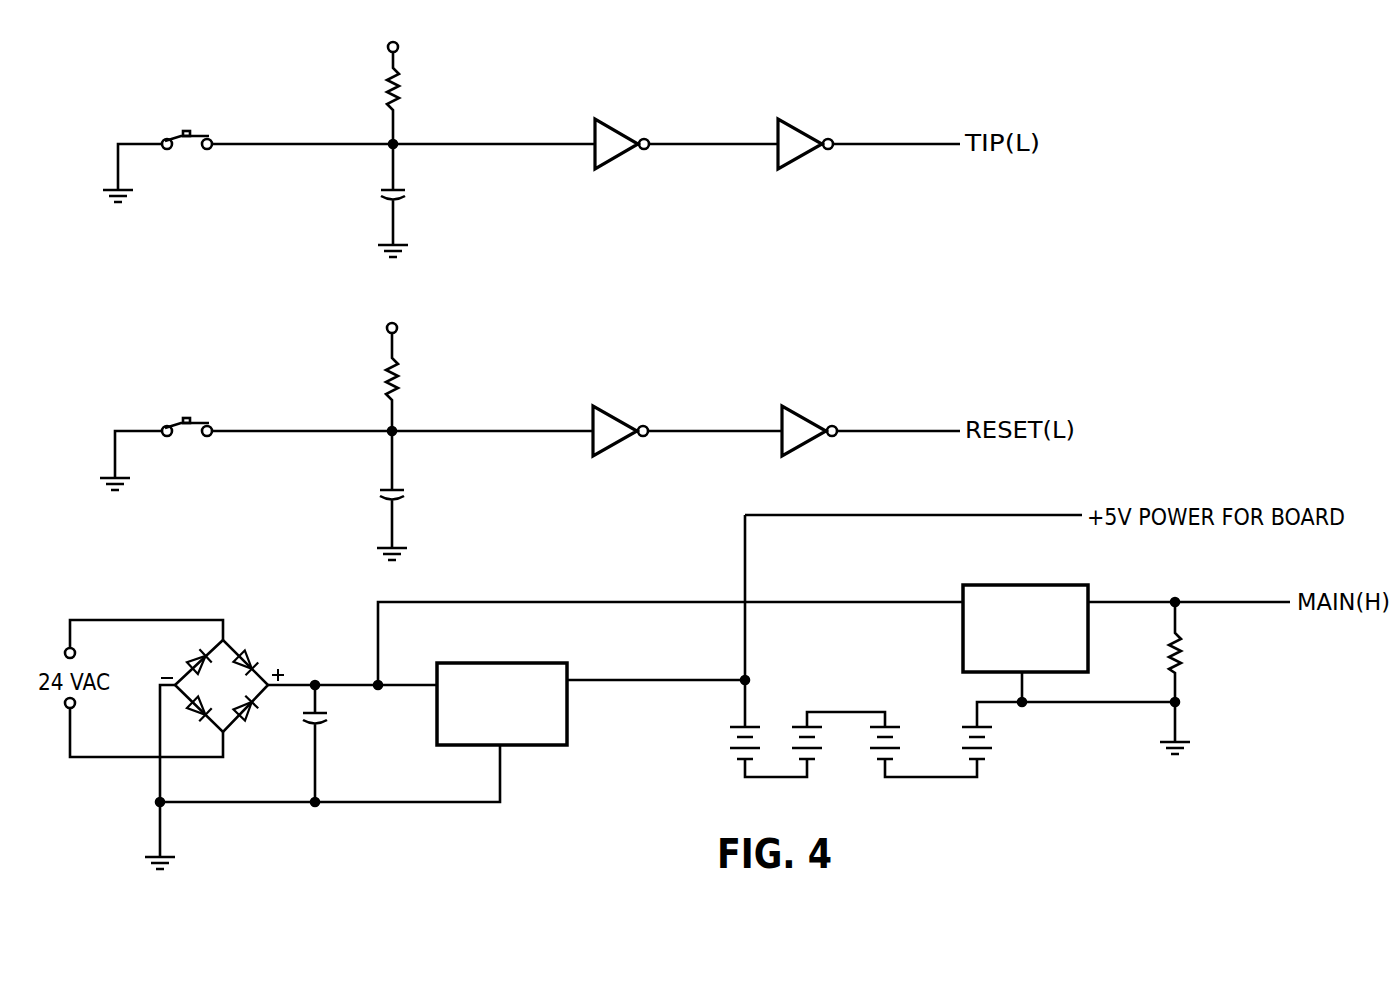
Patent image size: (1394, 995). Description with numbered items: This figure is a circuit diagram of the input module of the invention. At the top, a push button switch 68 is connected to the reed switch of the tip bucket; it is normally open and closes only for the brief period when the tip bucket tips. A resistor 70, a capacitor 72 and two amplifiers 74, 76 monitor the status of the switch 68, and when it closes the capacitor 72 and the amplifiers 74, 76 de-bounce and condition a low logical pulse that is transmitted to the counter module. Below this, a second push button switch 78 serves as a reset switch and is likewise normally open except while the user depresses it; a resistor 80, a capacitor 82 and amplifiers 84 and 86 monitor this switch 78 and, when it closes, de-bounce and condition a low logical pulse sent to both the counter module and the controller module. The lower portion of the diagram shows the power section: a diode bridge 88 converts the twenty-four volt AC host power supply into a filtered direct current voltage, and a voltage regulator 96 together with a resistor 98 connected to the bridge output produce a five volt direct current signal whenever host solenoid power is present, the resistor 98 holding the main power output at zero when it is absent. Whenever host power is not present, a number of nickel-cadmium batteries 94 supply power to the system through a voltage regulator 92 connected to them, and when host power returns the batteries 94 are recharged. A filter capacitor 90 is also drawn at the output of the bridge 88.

The push button switch 68 is at (167, 126).
The resistor 70 is at (392, 86).
The capacitor 72 is at (383, 193).
The amplifier 74 is at (598, 118).
The amplifier 76 is at (783, 118).
The push button switch 78 is at (167, 416).
The resistor 80 is at (390, 380).
The capacitor 82 is at (380, 492).
The amplifier 84 is at (598, 405).
The amplifier 86 is at (785, 405).
The diode bridge 88 is at (237, 630).
The capacitor C4 90 is at (322, 725).
The voltage regulator 92 is at (567, 713).
The nickel-cadmium batteries 94 is at (900, 778).
The voltage regulator 96 is at (963, 630).
The resistor 98 is at (1180, 655).